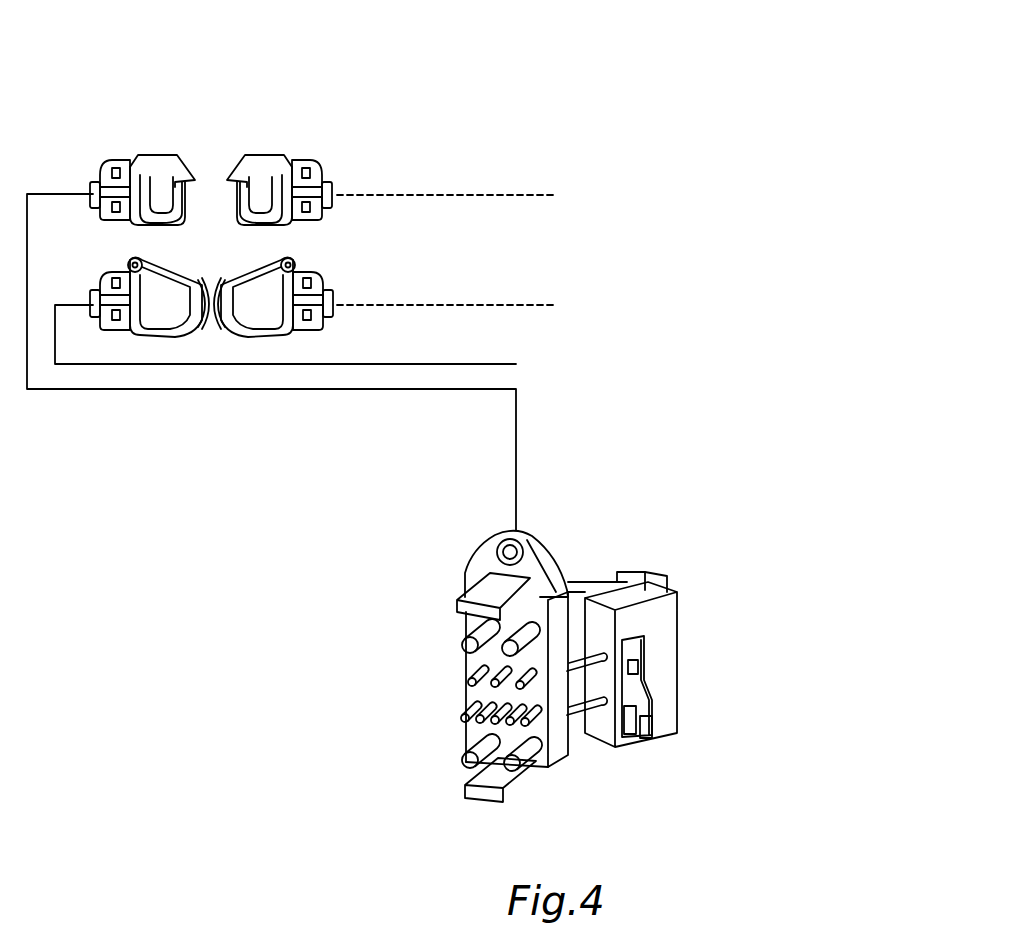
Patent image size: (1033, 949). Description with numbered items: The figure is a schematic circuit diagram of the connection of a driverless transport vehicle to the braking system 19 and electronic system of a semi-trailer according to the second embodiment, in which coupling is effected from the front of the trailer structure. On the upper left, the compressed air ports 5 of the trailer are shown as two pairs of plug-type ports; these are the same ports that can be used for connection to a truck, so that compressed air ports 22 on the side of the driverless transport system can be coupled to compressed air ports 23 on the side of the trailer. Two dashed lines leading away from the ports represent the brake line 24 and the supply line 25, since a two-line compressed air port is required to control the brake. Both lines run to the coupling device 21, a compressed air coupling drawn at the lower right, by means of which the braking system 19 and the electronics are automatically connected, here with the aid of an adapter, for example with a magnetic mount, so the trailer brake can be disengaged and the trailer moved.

The braking system 19 is at (657, 102).
The compressed air ports 5 is at (152, 152).
The compressed air ports 22 is at (297, 158).
The compressed air ports 23 is at (325, 275).
The brake line 24 is at (440, 192).
The supply line 25 is at (440, 300).
The coupling device 21 is at (707, 543).